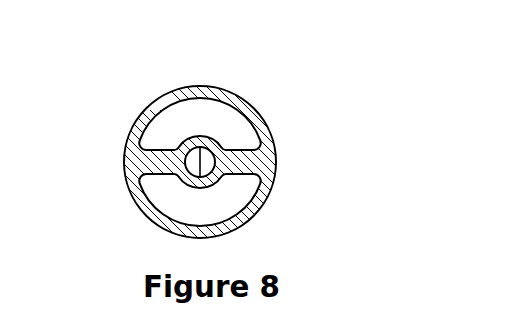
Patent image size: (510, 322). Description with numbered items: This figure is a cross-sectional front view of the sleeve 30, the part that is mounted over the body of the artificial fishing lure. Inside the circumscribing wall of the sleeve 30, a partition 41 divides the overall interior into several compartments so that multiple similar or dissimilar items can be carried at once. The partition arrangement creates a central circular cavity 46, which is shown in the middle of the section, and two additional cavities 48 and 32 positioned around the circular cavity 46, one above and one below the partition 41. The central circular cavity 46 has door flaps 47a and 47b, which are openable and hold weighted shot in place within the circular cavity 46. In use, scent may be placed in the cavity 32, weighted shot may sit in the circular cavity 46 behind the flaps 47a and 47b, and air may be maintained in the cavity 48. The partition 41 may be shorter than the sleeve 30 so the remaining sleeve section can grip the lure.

The sleeve 30 is at (213, 164).
The cavity 32 is at (163, 124).
The partition 41 is at (153, 162).
The central circular cavity 46 is at (216, 152).
The door flap 47a is at (192, 167).
The door flap 47b is at (210, 150).
The cavity 48 is at (230, 200).